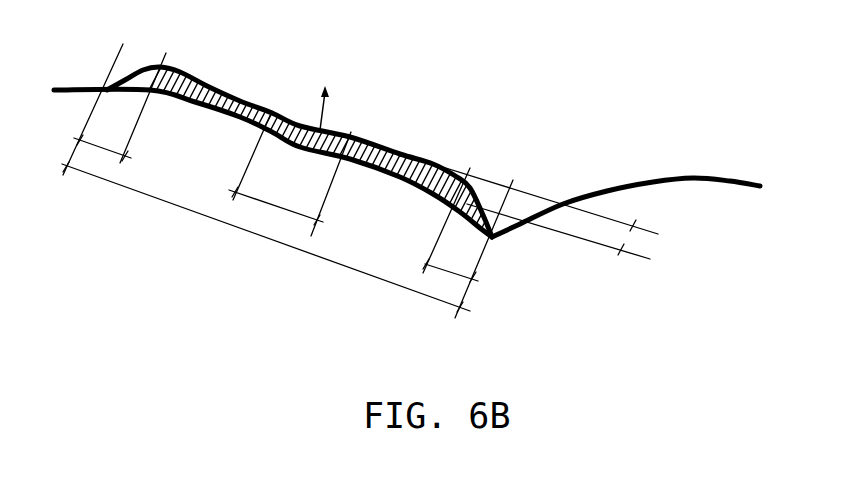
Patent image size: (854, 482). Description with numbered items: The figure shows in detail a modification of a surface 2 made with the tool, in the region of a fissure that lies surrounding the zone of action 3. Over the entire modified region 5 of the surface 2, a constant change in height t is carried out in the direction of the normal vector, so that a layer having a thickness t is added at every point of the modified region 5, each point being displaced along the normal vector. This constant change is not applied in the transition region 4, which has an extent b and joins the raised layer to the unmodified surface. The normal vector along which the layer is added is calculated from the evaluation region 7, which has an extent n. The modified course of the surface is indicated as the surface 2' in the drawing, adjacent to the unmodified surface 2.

The surface 2 is at (626, 155).
The original surface in groove region 2' is at (336, 213).
The zone of action 3 is at (353, 280).
The transition region 4 is at (487, 192).
The modified region 5 is at (450, 152).
The evaluation region 7 is at (288, 117).